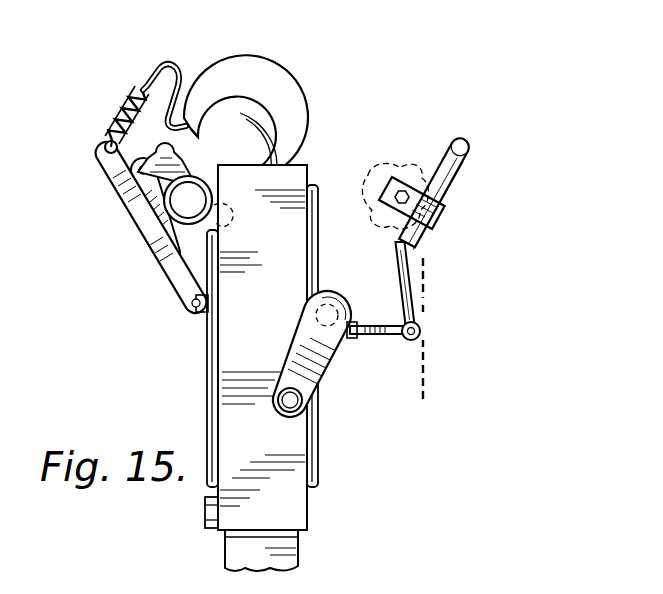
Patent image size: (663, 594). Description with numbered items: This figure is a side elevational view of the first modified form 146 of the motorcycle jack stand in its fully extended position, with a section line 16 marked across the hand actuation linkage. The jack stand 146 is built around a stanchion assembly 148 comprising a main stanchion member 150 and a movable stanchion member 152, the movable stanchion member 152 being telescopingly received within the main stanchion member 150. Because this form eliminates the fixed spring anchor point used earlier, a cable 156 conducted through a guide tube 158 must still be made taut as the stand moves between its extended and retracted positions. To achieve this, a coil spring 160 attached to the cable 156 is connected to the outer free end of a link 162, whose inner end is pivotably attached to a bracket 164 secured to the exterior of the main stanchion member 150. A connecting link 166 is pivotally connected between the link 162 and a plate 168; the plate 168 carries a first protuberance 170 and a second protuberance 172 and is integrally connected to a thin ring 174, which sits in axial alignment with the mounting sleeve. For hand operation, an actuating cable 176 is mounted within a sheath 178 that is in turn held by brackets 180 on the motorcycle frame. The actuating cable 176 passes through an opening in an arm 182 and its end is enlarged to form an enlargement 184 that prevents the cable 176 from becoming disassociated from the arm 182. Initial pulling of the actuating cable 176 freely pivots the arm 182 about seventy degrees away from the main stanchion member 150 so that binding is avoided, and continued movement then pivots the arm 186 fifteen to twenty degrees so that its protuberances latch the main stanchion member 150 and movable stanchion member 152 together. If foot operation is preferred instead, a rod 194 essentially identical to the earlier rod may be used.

The first modified form of jack stand 146 is at (421, 133).
The stanchion assembly 148 is at (312, 168).
The main stanchion member 150 is at (295, 513).
The movable stanchion member 152 is at (287, 557).
The cable 156 is at (160, 73).
The guide tube 158 is at (273, 137).
The coil spring 160 is at (123, 120).
The link 162 is at (102, 167).
The bracket 164 is at (188, 313).
The connecting link 166 is at (143, 203).
The plate 168 is at (202, 168).
The first protuberance 170 is at (177, 130).
The second protuberance 172 is at (168, 248).
The ring 174 is at (165, 193).
The actuating cable 176 is at (413, 310).
The sheath 178 is at (452, 177).
The brackets 180 is at (438, 218).
The arm 182 is at (388, 328).
The enlargement 184 is at (410, 338).
The arm 186 is at (333, 370).
The rod 194 is at (305, 410).
The section line 16- 16 is at (430, 277).